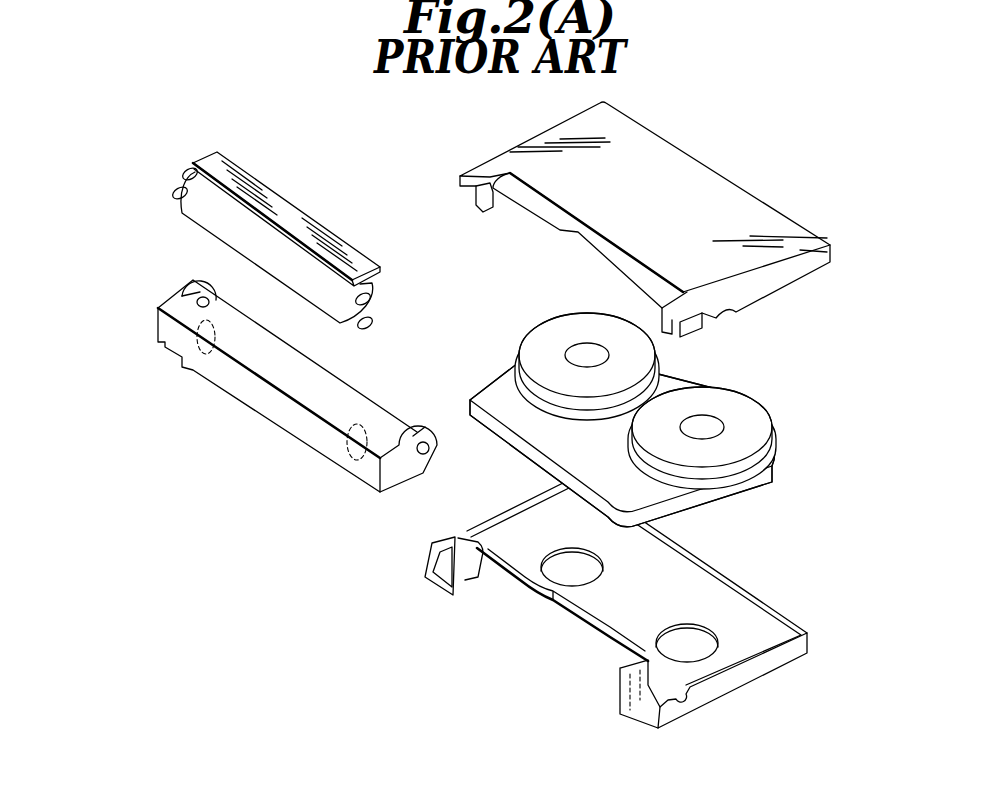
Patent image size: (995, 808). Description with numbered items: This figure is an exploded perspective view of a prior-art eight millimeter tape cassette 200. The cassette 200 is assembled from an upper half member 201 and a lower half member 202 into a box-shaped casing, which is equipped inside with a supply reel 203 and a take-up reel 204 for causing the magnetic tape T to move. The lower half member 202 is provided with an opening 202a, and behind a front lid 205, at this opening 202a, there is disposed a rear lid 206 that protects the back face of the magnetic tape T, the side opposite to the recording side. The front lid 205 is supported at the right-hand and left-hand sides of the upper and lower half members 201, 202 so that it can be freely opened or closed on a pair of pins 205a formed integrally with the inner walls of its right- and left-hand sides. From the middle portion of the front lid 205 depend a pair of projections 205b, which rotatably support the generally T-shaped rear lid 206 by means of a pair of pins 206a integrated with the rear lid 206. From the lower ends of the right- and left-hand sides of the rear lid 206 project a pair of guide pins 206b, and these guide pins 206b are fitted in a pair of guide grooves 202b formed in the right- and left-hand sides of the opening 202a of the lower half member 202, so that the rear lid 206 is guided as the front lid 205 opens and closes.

The 8 mm tape cassette 200 is at (336, 77).
The upper half member 201 is at (690, 195).
The lower half member 202 is at (626, 622).
The opening 202a is at (567, 633).
The guide grooves 202b is at (477, 585).
The supply reel 203 is at (743, 420).
The take-up reel 204 is at (566, 330).
The front lid 205 is at (237, 405).
The pins 205a is at (183, 293).
The projections 205b is at (343, 470).
The rear lid 206 is at (284, 204).
The pins 206a is at (188, 171).
The guide pins 206b is at (175, 193).
The magnetic tape T is at (490, 392).